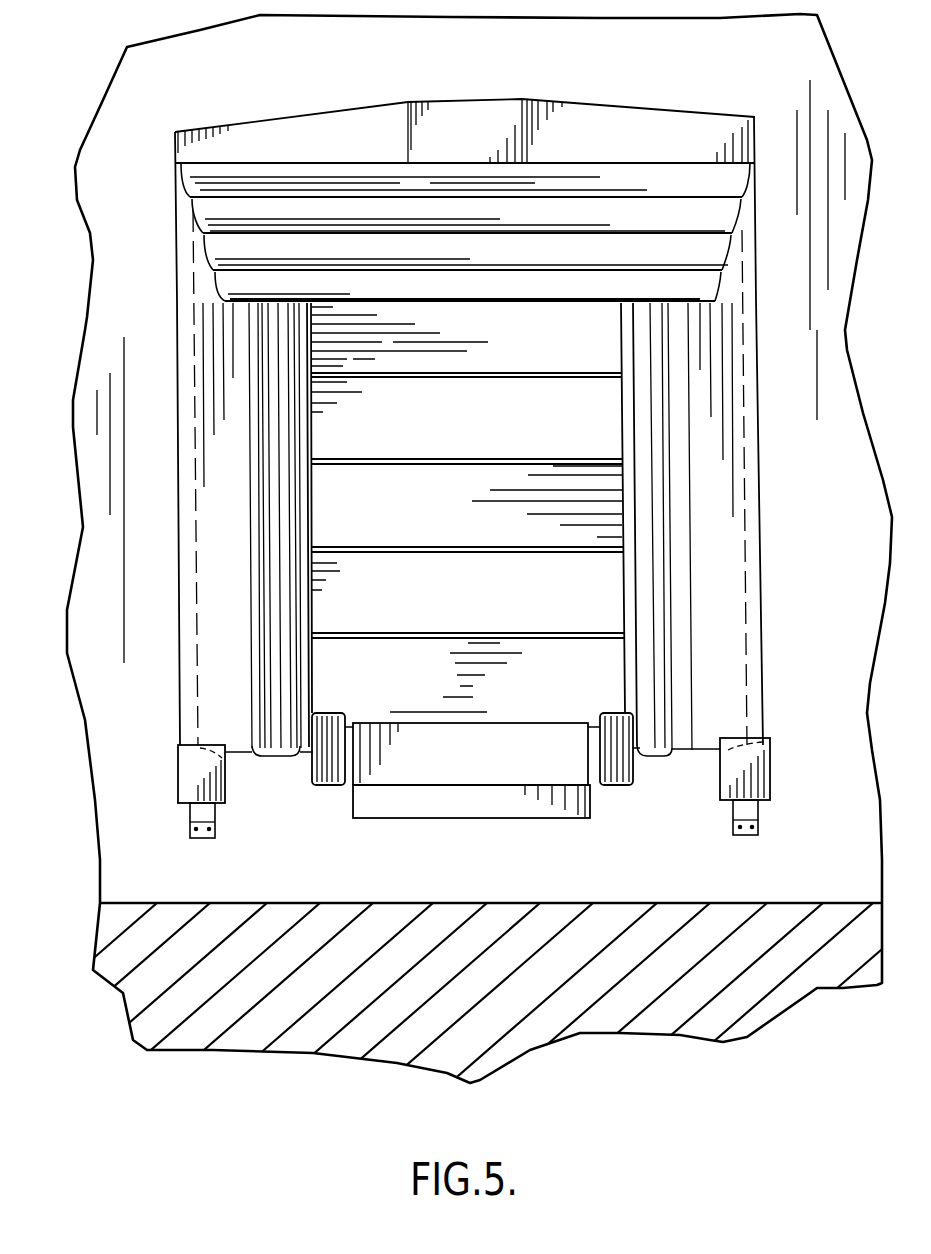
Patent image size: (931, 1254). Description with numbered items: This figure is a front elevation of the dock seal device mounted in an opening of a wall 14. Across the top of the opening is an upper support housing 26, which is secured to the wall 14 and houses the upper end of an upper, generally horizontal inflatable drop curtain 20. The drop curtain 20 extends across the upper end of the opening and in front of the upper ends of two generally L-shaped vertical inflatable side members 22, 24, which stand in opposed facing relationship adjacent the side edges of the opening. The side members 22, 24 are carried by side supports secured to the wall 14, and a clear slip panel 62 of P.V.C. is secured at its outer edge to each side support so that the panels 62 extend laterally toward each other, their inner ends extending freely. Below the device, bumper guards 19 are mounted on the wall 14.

The wall 14 is at (838, 857).
The bumper guards 19 is at (772, 767).
The inflatable drop curtain 20 is at (737, 177).
The inflatable side member 22 is at (257, 759).
The inflatable side member 24 is at (665, 757).
The upper support housing 26 is at (671, 104).
The clear slip panel 62 is at (210, 687).